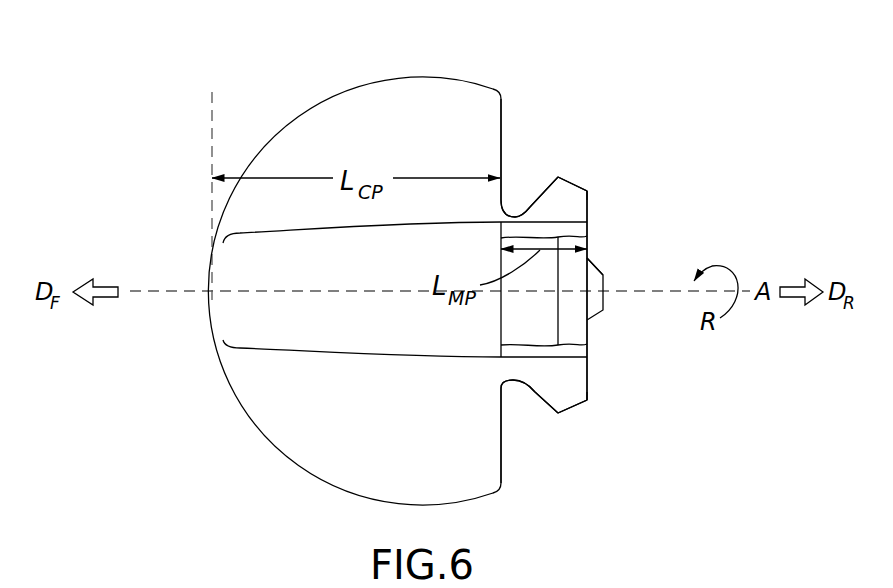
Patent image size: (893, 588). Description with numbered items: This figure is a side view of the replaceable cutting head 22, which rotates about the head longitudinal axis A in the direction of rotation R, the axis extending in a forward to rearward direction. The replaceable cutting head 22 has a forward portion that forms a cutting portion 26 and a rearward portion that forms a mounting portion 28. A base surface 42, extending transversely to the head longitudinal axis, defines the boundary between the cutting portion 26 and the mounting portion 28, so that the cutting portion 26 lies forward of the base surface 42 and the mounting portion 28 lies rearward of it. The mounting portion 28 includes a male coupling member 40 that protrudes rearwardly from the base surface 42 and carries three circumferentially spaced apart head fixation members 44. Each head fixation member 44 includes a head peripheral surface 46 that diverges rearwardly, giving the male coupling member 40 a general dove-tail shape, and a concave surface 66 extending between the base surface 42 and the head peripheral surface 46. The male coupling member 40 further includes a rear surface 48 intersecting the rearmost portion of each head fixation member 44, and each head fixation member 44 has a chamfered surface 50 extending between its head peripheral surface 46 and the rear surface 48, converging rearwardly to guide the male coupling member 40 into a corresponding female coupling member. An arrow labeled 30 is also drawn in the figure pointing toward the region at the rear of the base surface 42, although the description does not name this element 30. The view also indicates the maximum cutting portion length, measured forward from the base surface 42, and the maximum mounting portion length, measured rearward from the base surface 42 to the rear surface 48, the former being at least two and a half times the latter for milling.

The replaceable cutting head 22 is at (612, 113).
The cutting portion 26 is at (228, 413).
The mounting portion 28 is at (688, 160).
The neck 30 is at (485, 383).
The male coupling member 40 is at (597, 230).
The base surface 42 is at (503, 135).
The head fixation member 44 is at (553, 140).
The head peripheral surface 46 is at (552, 177).
The rear surface 48 is at (589, 210).
The chamfered surface 50 is at (587, 187).
The concave surface 66 is at (516, 213).